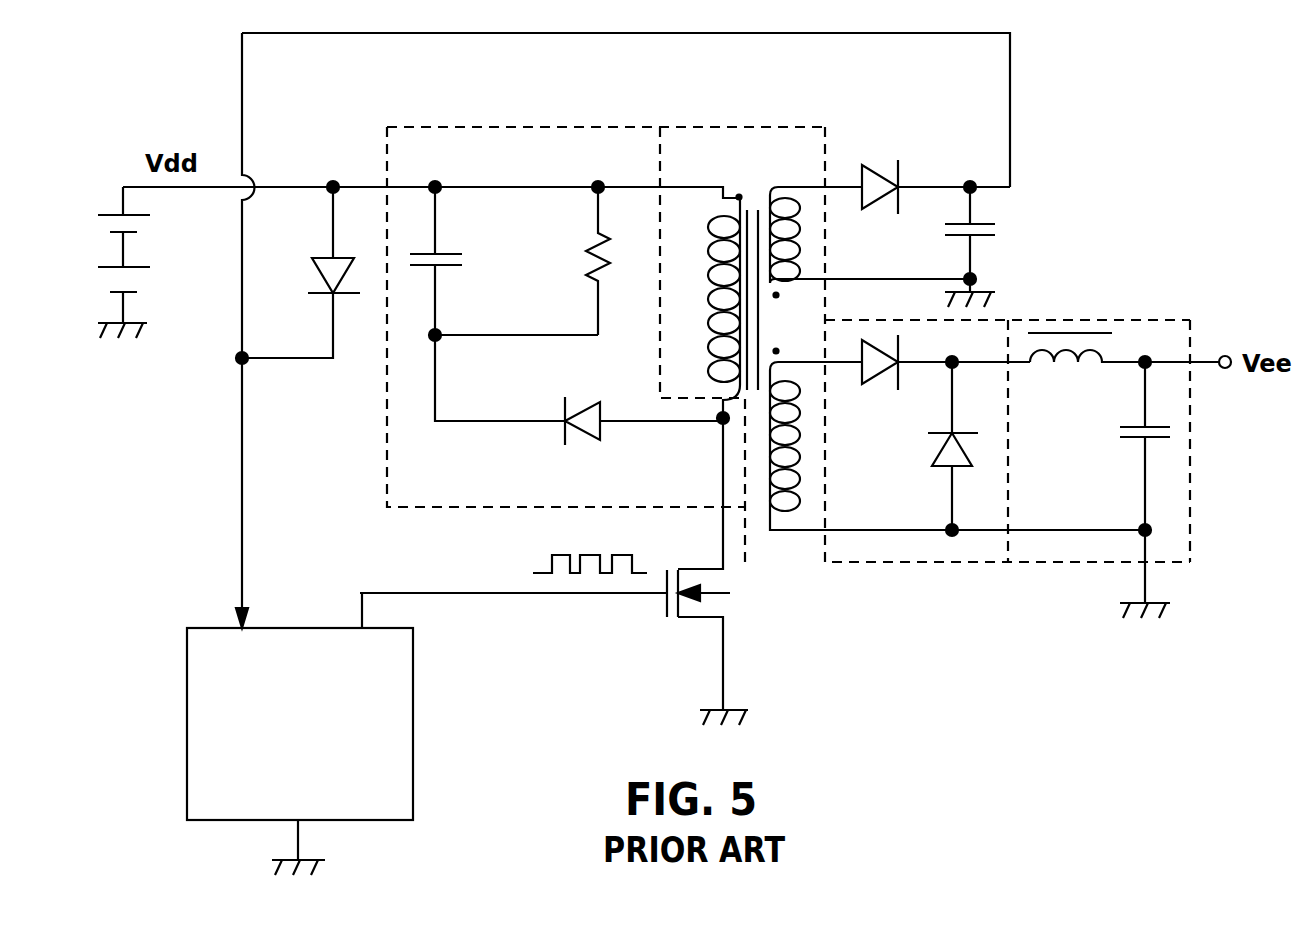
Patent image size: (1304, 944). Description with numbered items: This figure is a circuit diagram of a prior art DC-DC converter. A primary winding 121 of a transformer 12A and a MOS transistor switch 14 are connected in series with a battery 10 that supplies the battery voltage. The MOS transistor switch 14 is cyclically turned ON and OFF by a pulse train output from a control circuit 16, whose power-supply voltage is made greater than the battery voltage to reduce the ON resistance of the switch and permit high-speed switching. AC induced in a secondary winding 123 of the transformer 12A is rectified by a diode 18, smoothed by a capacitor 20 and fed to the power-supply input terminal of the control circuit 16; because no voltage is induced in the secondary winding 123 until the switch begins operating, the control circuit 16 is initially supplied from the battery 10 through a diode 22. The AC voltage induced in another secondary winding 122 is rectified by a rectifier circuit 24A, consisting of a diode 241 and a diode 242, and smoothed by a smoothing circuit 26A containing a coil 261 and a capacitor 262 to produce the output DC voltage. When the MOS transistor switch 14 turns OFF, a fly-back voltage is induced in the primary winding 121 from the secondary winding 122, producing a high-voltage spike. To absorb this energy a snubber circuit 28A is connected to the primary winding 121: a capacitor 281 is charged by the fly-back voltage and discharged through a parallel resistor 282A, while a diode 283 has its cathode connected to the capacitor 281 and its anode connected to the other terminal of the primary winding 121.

The battery 10 is at (111, 215).
The diode 22 is at (316, 274).
The snubber circuit 28A is at (385, 428).
The capacitor 281 is at (454, 258).
The resistor 282A is at (589, 275).
The diode 283 is at (579, 442).
The transformer 12A is at (765, 562).
The primary winding 121 is at (729, 192).
The secondary winding 123 is at (793, 255).
The secondary winding 122 is at (800, 517).
The diode 18 is at (877, 180).
The capacitor 20 is at (984, 228).
The rectifier circuit 24A is at (904, 566).
The diode 241 is at (885, 385).
The diode 242 is at (942, 468).
The smoothing circuit 26A is at (1062, 572).
The coil 261 is at (1086, 370).
The capacitor 262 is at (1128, 440).
The MOS transistor switch 14 is at (705, 619).
The control circuit 16 is at (413, 725).